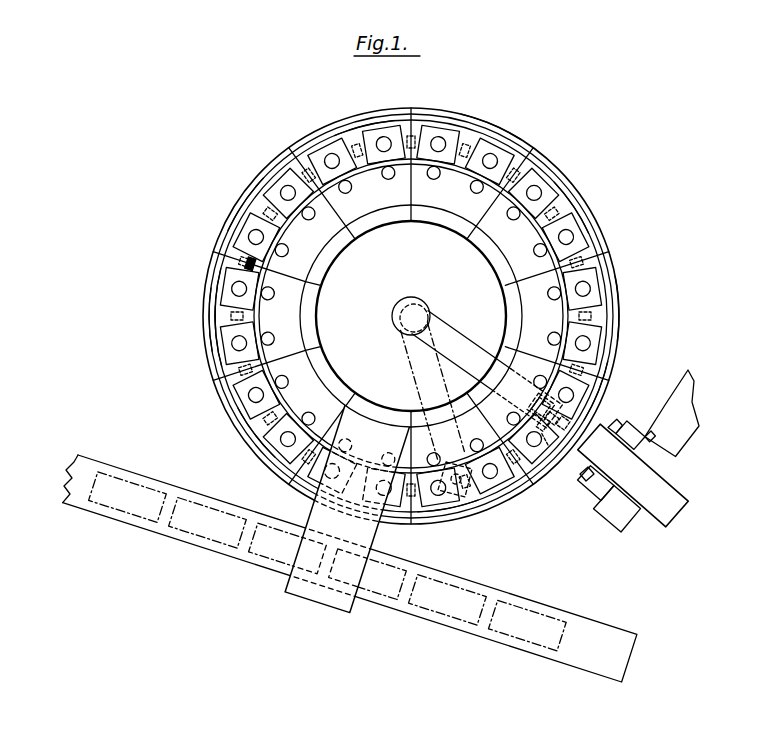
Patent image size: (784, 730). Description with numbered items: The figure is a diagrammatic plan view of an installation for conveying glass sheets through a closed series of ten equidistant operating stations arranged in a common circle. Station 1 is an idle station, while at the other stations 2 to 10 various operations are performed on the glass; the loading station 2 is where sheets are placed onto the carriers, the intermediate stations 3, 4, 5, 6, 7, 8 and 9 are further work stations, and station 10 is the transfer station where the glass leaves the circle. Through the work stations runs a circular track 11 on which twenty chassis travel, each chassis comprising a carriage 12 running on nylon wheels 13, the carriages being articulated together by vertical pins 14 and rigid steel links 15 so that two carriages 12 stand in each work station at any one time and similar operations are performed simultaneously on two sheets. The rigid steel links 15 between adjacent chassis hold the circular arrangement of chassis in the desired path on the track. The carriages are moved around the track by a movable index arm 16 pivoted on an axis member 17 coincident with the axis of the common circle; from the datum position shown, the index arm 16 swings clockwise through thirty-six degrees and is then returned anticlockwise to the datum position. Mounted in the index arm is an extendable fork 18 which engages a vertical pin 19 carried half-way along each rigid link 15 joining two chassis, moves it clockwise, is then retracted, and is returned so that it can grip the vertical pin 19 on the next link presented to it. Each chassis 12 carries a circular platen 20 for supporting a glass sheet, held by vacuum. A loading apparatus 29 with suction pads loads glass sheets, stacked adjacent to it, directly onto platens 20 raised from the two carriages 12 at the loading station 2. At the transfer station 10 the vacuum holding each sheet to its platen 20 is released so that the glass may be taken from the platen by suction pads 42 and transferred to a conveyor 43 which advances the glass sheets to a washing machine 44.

The idle station 1 is at (450, 509).
The loading station 2 is at (311, 488).
The operating station 3 is at (257, 433).
The operating station 4 is at (210, 318).
The operating station 5 is at (245, 203).
The operating station 6 is at (362, 126).
The operating station 7 is at (490, 126).
The operating station 8 is at (573, 208).
The operating station 9 is at (620, 310).
The transfer station 10 is at (598, 393).
The circular track 11 is at (218, 300).
The carriage 12 is at (225, 291).
The nylon wheel 13 is at (217, 334).
The vertical pin 14 is at (240, 265).
The rigid steel link 15 is at (243, 262).
The index arm 16 is at (453, 346).
The axis member 17 is at (413, 312).
The extendable fork 18 is at (545, 409).
The vertical pin 19 is at (268, 212).
The platen 20 is at (222, 346).
The loading apparatus 29 is at (344, 604).
The suction pads 42 is at (598, 500).
The conveyor 43 is at (669, 440).
The washing machine 44 is at (681, 386).